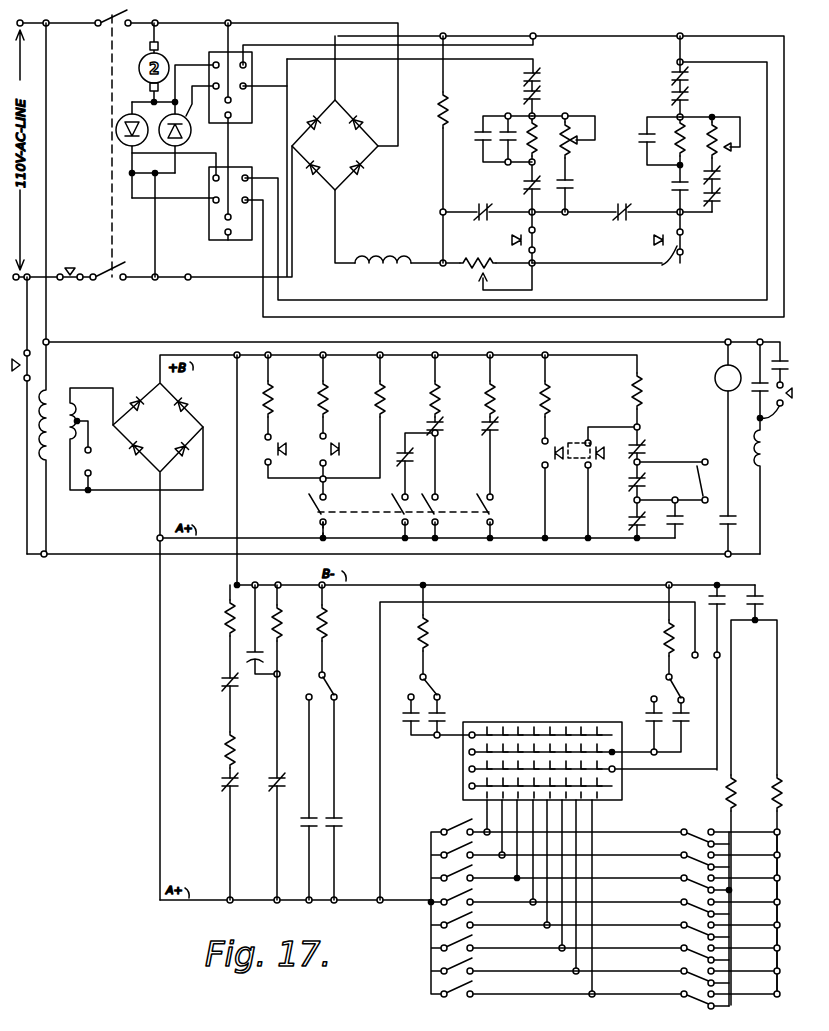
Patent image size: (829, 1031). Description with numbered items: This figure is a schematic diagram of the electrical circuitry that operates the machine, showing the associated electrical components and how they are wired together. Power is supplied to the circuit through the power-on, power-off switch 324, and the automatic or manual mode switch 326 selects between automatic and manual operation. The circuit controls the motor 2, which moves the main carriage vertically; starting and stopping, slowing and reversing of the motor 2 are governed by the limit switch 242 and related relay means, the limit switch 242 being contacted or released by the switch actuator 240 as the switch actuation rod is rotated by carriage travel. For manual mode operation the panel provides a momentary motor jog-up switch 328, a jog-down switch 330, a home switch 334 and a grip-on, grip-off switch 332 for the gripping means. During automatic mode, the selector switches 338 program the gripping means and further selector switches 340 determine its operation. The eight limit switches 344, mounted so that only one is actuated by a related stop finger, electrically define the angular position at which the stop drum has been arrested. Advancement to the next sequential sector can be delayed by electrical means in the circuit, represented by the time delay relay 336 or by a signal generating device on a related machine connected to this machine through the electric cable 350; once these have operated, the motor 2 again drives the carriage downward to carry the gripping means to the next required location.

The power-on, power-off switch 324 is at (112, 53).
The motor 2 is at (387, 242).
The momentary motor jog-up switch 328 is at (540, 240).
The jog-down switch 330 is at (607, 261).
The home switch 334 is at (302, 449).
The automatic or manual mode switch 326 is at (576, 444).
The time delay relay 336 is at (721, 384).
The grip-on, grip-off switch 332 is at (771, 412).
The electric cable 350 is at (696, 481).
The limit switch 242 is at (369, 497).
The switch actuator 240 is at (457, 506).
The selector switches 340 is at (440, 676).
The limit switches 344 is at (459, 992).
The selector switches 338 is at (692, 996).